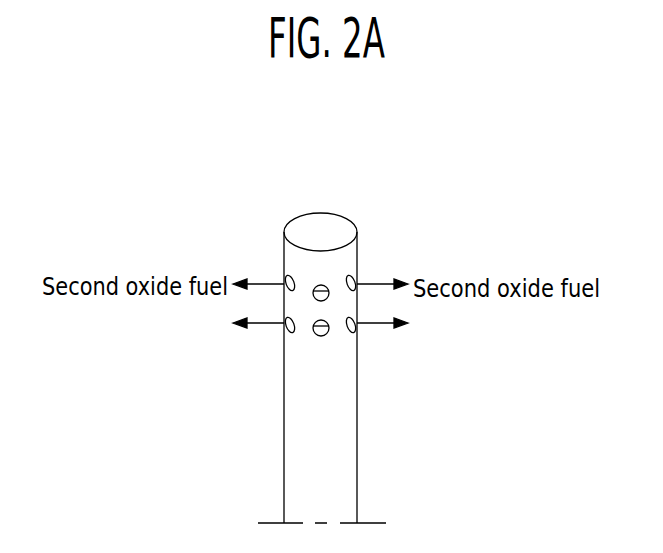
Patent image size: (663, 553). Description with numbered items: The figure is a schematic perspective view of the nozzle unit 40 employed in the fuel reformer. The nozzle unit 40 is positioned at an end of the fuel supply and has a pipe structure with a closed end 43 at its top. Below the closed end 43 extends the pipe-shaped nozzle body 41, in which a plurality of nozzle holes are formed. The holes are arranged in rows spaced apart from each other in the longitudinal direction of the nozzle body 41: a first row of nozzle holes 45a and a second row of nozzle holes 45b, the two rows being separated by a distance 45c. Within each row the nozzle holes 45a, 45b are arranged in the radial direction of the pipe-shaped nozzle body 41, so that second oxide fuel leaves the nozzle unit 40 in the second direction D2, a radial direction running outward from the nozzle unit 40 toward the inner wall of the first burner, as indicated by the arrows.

The nozzle unit 40 is at (221, 200).
The nozzle body 41 is at (284, 392).
The closed end 43 is at (322, 211).
The first row of nozzle holes 45a is at (327, 287).
The second row of nozzle holes 45b is at (323, 334).
The distance 45c is at (322, 312).
The second direction D2 is at (373, 284).